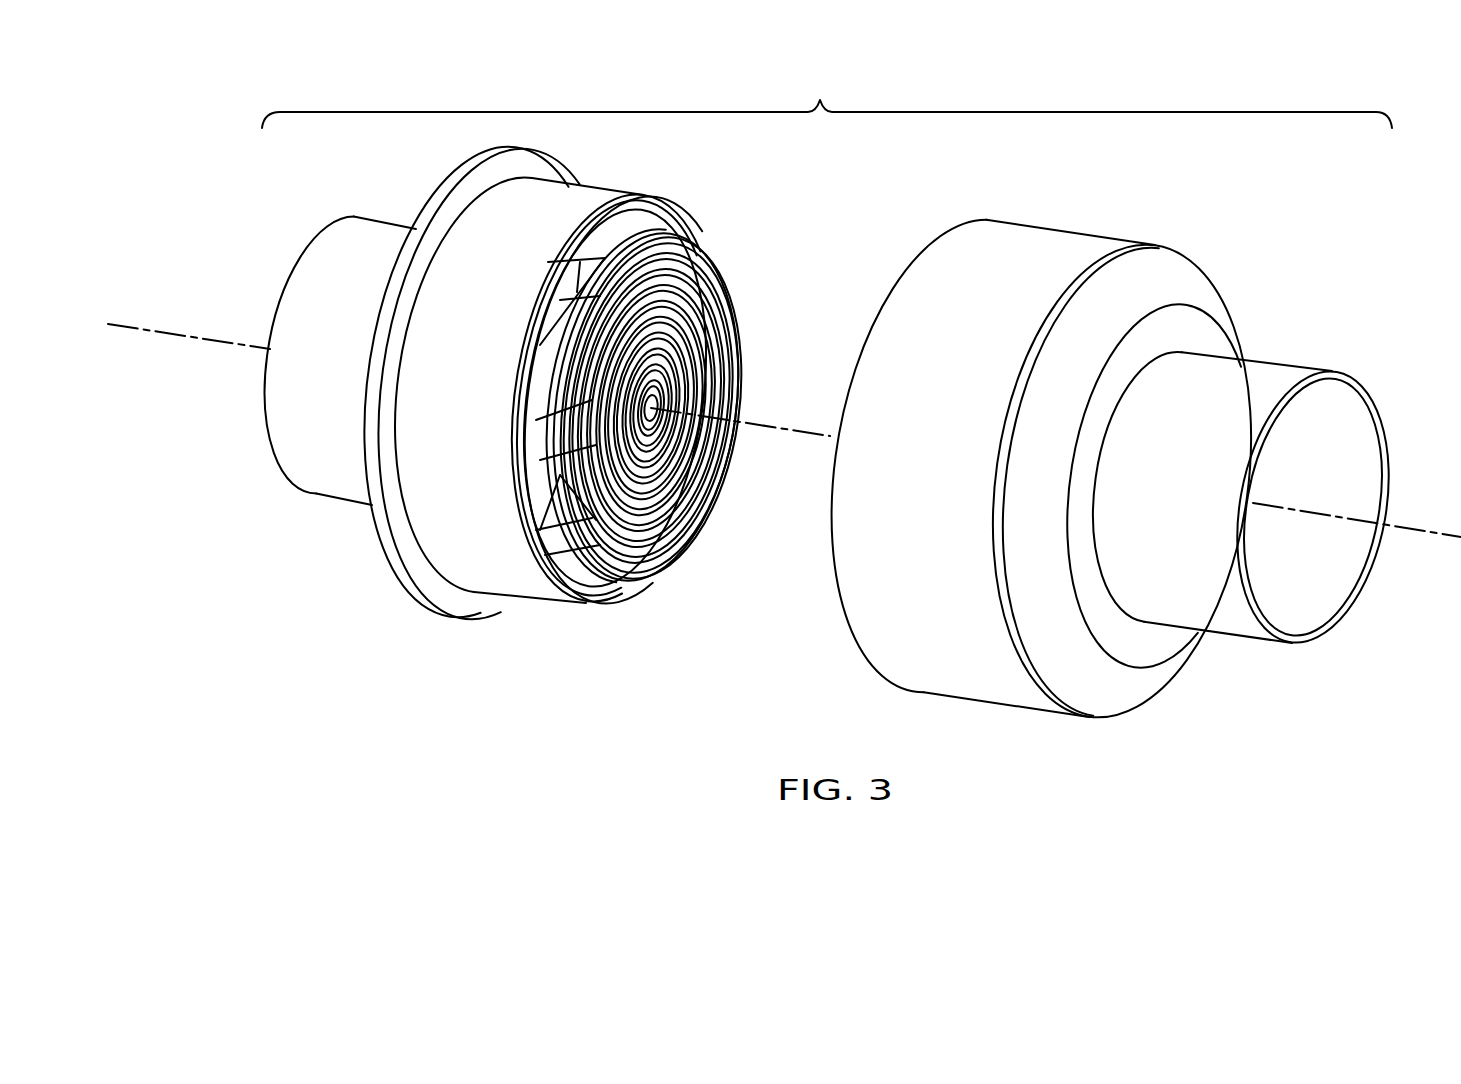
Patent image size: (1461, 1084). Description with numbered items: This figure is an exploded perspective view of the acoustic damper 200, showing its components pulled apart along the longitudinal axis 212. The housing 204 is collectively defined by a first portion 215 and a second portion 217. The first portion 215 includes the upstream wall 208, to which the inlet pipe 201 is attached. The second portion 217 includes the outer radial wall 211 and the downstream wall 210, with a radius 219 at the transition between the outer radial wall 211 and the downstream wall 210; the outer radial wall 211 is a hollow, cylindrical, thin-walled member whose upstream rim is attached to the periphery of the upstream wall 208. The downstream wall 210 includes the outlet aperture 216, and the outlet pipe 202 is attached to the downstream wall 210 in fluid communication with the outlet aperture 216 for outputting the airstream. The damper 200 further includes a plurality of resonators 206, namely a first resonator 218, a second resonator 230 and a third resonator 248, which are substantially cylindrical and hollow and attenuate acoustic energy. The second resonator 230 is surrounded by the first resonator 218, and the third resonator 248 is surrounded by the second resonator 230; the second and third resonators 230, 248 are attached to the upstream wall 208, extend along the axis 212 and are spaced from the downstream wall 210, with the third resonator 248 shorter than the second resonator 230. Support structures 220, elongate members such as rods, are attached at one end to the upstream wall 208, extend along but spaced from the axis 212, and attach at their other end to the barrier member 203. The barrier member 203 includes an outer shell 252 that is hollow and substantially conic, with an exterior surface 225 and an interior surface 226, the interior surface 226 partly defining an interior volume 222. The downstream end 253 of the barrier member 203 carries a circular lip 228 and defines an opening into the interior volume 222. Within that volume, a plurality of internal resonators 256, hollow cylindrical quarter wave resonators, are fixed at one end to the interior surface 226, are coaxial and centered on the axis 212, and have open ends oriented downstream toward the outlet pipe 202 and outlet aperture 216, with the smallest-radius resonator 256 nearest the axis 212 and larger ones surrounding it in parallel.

The acoustic damper 200 is at (190, 172).
The inlet pipe 201 is at (310, 492).
The outlet pipe 202 is at (1300, 372).
The barrier member 203 is at (740, 289).
The housing 204 is at (827, 96).
The resonators 206 is at (634, 208).
The upstream wall 208 is at (390, 562).
The downstream wall 210 is at (1193, 273).
The outer radial wall 211 is at (1092, 241).
The longitudinal axis 212 is at (150, 326).
The first portion 215 is at (352, 210).
The outlet aperture 216 is at (1332, 476).
The second portion 217 is at (1133, 466).
The first resonator 218 is at (966, 688).
The radius 219 is at (1102, 716).
The support structure 220 is at (590, 265).
The interior volume 222 is at (678, 552).
The exterior surface 225 is at (540, 425).
The interior surface 226 is at (650, 577).
The circular lip 228 is at (686, 238).
The second resonator 230 is at (528, 597).
The third resonator 248 is at (572, 570).
The outer shell 252 is at (642, 590).
The downstream end 253 is at (728, 272).
The internal resonators 256 is at (672, 400).